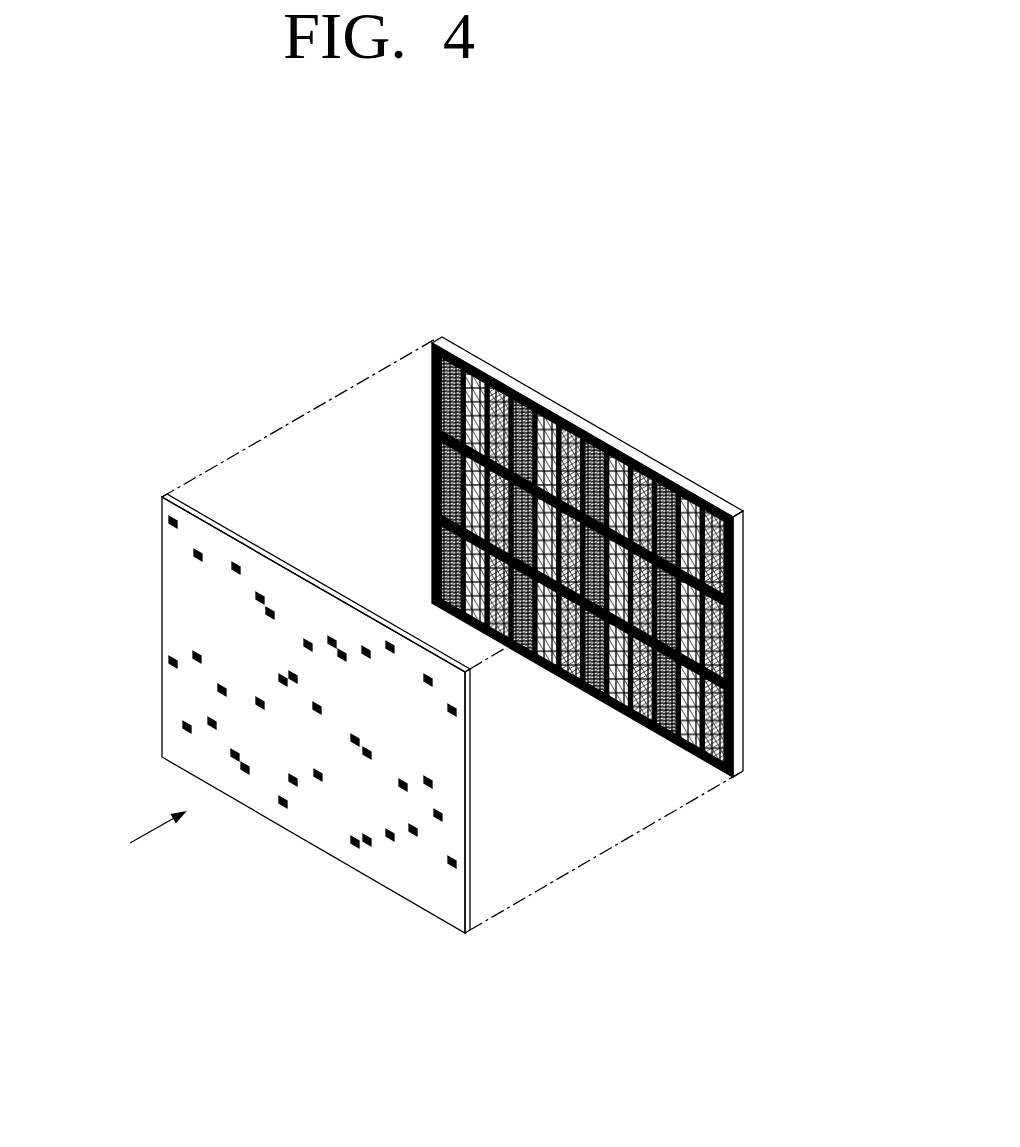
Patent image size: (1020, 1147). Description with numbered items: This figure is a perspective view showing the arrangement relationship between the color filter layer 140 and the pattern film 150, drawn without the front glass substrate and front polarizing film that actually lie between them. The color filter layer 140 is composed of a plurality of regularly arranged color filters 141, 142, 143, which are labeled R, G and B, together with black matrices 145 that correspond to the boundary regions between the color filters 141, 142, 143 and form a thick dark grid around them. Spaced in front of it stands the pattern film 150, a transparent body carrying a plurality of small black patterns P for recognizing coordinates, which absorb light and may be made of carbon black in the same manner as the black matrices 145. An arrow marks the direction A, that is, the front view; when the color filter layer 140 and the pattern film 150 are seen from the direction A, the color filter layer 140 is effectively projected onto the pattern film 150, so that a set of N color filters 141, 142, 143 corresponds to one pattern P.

The color filter layer 140 is at (574, 557).
The color filter 141 is at (663, 477).
The color filter 142 is at (693, 491).
The color filter 143 is at (722, 512).
The black matrix 145 is at (740, 650).
The pattern film 150 is at (148, 561).
The pattern for recognizing coordinates P is at (184, 728).
The direction A is at (145, 839).